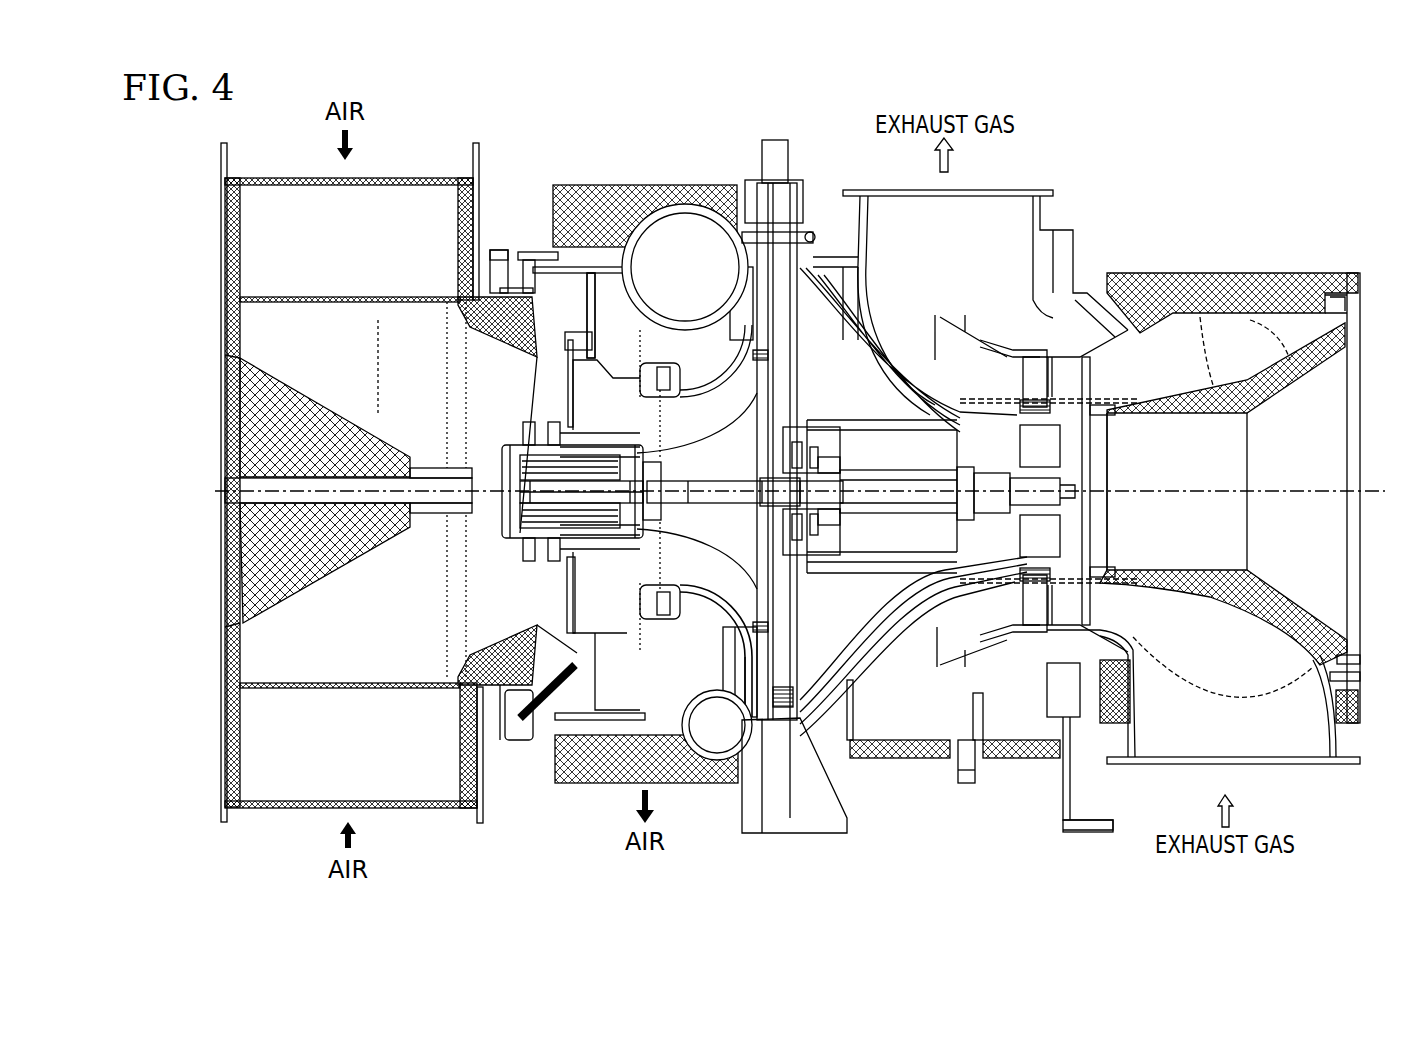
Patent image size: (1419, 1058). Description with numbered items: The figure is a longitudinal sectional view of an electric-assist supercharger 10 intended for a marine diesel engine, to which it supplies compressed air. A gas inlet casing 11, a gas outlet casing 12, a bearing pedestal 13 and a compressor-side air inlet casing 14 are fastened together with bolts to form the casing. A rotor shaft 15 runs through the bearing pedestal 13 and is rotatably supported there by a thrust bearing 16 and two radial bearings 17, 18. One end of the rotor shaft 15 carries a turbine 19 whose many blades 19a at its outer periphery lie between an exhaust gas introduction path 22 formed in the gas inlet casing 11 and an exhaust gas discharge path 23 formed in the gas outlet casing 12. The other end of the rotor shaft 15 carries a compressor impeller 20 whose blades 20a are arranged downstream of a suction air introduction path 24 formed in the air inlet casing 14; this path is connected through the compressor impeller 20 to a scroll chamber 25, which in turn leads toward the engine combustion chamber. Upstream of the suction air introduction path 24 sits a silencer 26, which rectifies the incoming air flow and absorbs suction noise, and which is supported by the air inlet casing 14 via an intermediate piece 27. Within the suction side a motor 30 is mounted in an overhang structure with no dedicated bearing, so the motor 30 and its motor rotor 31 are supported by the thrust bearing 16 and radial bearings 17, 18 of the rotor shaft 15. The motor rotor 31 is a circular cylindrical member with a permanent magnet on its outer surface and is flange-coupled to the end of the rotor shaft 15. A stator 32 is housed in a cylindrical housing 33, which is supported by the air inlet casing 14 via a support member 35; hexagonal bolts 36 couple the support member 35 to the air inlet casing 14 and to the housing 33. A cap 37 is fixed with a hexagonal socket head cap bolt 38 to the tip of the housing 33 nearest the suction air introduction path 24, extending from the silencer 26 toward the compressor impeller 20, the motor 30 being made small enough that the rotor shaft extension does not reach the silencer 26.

The supercharger 10 is at (1112, 140).
The gas inlet casing 11 is at (1258, 365).
The gas outlet casing 12 is at (870, 215).
The bearing pedestal 13 is at (810, 212).
The compressor-side air inlet casing 14 is at (678, 612).
The rotor shaft 15 is at (873, 507).
The thrust bearing 16 is at (775, 470).
The radial bearing 17 is at (830, 458).
The radial bearing 18 is at (1000, 478).
The turbine 19 is at (1092, 520).
The blades 19a is at (1035, 600).
The compressor impeller 20 is at (703, 523).
The blades 20a is at (678, 425).
The exhaust gas introduction path 22 is at (1283, 755).
The exhaust gas discharge path 23 is at (992, 215).
The suction air introduction path 24 is at (411, 655).
The scroll chamber 25 is at (716, 745).
The silencer 26 is at (222, 732).
The intermediate piece 27 is at (493, 240).
The motor 30 is at (520, 533).
The motor rotor 31 is at (498, 505).
The stator 32 is at (590, 453).
The housing 33 is at (590, 542).
The support member 35 is at (553, 605).
The hexagonal bolts 36 is at (565, 357).
The cap 37 is at (497, 537).
The hexagonal socket head cap bolt 38 is at (518, 445).